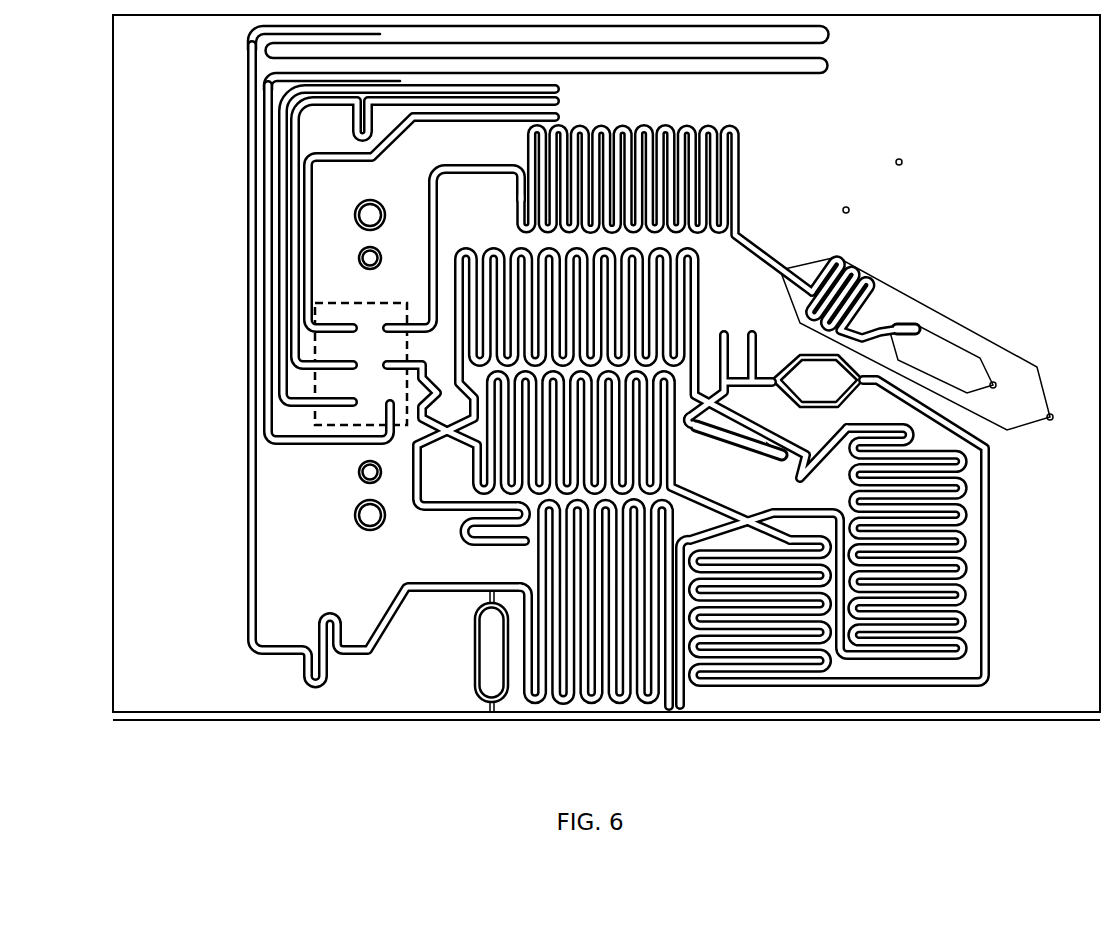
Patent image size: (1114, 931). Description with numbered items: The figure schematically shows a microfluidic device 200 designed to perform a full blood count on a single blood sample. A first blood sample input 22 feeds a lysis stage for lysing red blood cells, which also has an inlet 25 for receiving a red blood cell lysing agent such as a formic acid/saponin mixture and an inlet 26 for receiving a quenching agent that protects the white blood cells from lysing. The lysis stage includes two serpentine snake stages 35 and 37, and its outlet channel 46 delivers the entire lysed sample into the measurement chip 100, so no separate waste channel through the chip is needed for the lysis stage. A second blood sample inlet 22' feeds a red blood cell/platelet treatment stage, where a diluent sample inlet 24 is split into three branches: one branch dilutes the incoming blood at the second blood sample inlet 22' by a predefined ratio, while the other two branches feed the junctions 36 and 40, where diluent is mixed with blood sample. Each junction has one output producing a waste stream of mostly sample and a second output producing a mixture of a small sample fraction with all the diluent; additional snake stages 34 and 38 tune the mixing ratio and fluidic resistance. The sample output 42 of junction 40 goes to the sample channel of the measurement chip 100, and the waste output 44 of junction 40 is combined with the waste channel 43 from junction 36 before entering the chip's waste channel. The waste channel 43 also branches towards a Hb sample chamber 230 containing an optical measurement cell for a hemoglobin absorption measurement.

The first blood sample input 22 is at (943, 324).
The second blood sample inlet 22' is at (775, 361).
The diluent sample inlet 24 is at (791, 465).
The inlet for RBC lysing agent 25 is at (1006, 385).
The inlet for quenching agent 26 is at (1052, 417).
The snake stage 34 is at (813, 680).
The snake stage 35 is at (845, 262).
The junction 36 is at (745, 520).
The snake stage 37 is at (738, 130).
The snake stage 38 is at (512, 516).
The junction 40 is at (447, 436).
The sample output 42 is at (413, 363).
The waste channel 43 is at (641, 700).
The waste output 44 is at (418, 505).
The outlet channel of the lysing stage 46 is at (455, 168).
The measurement chip 100 is at (326, 428).
The microfluidic device 200 is at (968, 714).
The Hb sample chamber 230 is at (478, 661).